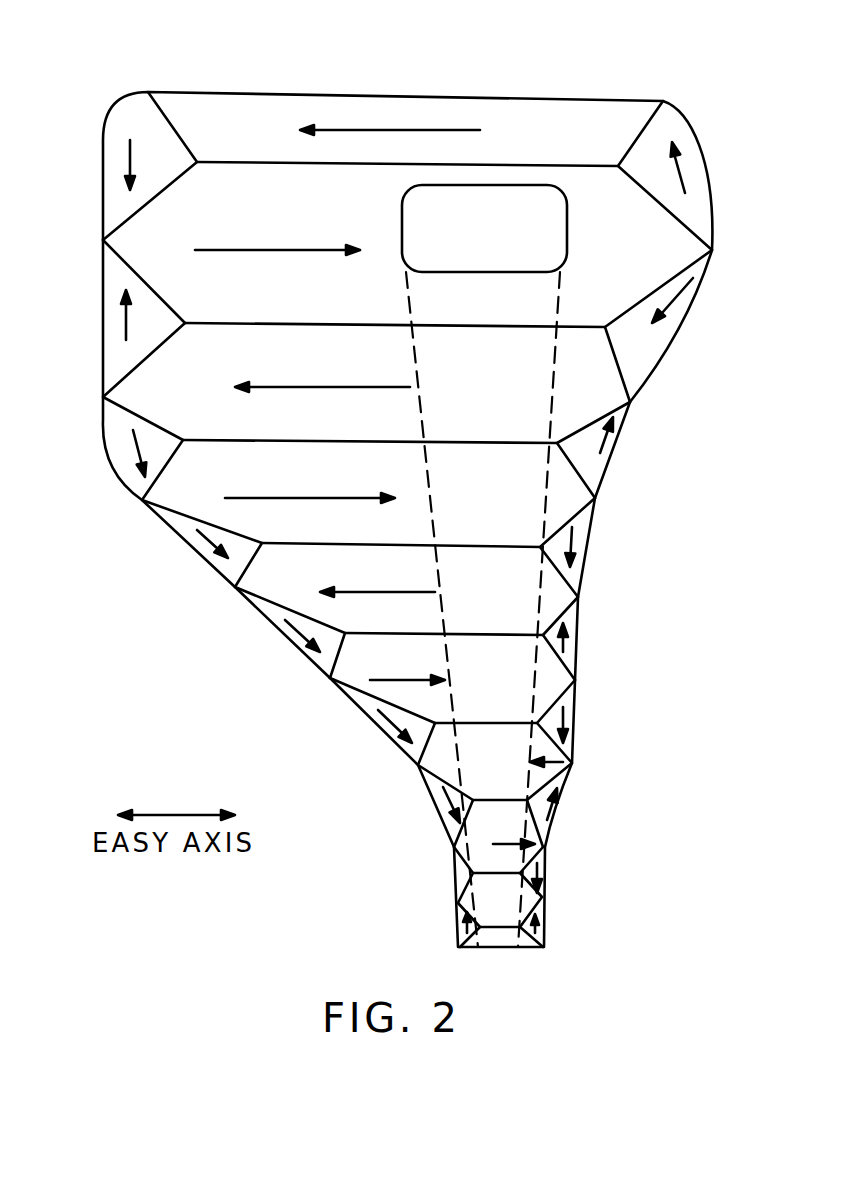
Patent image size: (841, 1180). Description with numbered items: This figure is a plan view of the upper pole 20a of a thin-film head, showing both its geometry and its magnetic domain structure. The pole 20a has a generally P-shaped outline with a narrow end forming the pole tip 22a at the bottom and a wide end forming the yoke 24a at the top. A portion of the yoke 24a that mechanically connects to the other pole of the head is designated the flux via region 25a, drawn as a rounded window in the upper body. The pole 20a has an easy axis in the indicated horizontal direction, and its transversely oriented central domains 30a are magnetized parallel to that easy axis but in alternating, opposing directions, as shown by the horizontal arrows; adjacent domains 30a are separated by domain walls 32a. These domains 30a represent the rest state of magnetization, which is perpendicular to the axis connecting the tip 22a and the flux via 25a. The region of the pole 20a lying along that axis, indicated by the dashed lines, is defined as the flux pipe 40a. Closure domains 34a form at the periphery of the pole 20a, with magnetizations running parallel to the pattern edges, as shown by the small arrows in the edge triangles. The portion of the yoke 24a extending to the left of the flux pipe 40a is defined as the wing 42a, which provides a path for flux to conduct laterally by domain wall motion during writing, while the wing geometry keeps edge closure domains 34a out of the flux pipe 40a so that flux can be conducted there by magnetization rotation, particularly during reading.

The upper pole 20a is at (738, 54).
The pole tip 22a is at (523, 948).
The yoke 24a is at (657, 261).
The flux via region 25a is at (420, 223).
The central domains 30a is at (148, 253).
The domain walls 32a is at (530, 447).
The closure domains 34a is at (322, 659).
The flux pipe 40a is at (522, 670).
The wing 42a is at (127, 225).